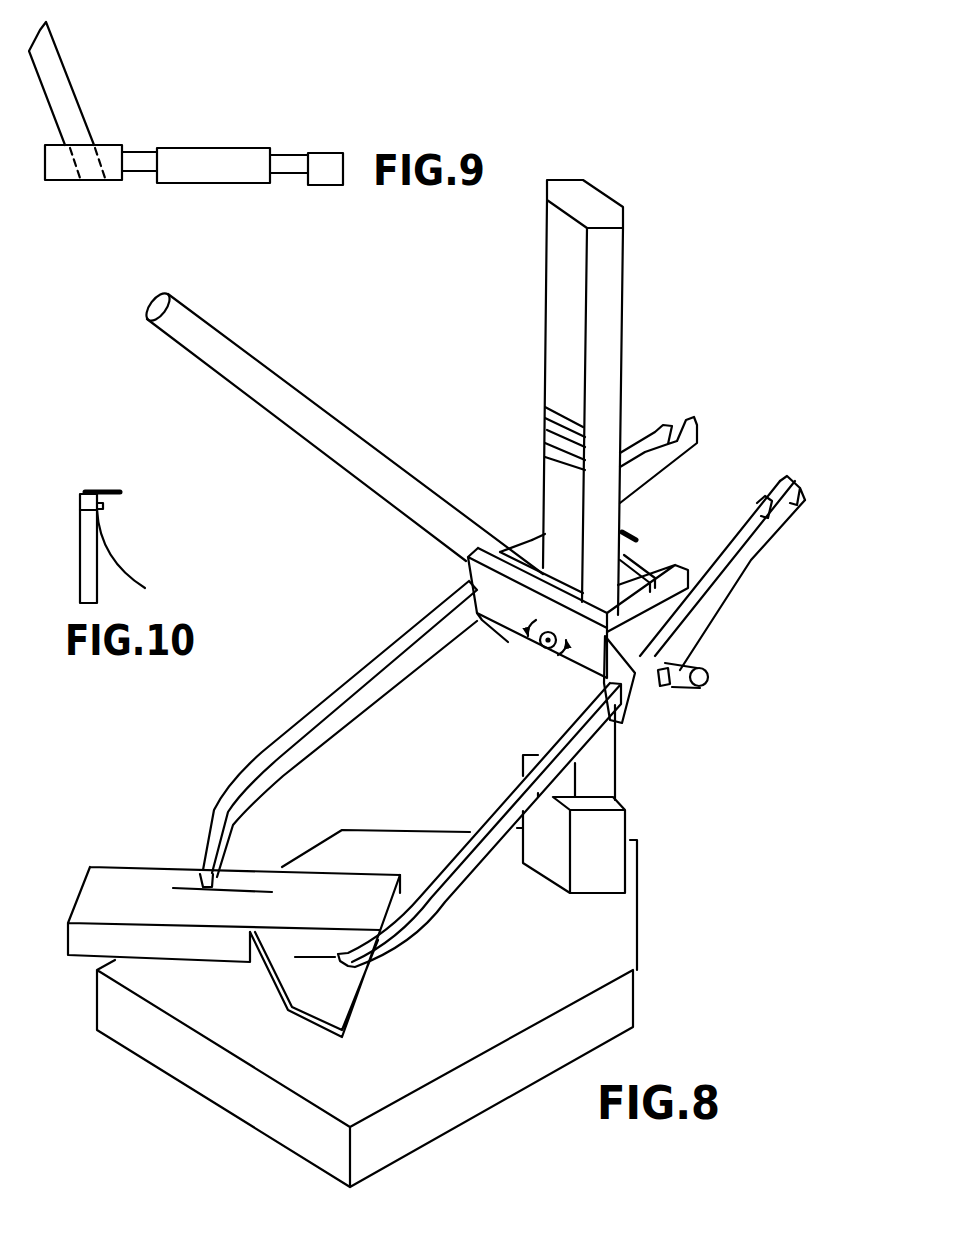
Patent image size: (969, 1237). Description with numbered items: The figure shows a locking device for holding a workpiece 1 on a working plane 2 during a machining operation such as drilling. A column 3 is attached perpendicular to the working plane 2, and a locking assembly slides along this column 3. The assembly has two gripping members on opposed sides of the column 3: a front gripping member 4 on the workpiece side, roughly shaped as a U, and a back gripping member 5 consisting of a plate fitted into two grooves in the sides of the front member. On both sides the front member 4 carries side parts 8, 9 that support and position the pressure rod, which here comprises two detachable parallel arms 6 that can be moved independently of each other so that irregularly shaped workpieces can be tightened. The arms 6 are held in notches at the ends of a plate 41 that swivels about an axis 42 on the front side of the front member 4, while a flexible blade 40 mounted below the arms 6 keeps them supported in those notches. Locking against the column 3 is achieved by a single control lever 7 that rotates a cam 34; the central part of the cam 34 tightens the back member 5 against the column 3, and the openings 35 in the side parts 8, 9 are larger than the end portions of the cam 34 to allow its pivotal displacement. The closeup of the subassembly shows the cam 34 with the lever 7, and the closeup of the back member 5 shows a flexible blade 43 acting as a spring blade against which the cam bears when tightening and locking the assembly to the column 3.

In FIG. 8, the workpiece 1 is at (118, 860).
In FIG. 8, the working plane 2 is at (95, 993).
In FIG. 8, the column 3 is at (625, 305).
In FIG. 8, the front gripping member 4 is at (540, 553).
In FIG. 10, the back gripping member 5 is at (80, 538).
In FIG. 8, the back gripping member 5 is at (630, 557).
In FIG. 8, the pressure rod arms 6 is at (485, 822).
In FIG. 9, the control lever 7 is at (60, 52).
In FIG. 8, the control lever 7 is at (258, 360).
In FIG. 8, the side part 8 is at (518, 537).
In FIG. 8, the side part 9 is at (680, 570).
In FIG. 9, the cam 34 is at (112, 147).
In FIG. 8, the cam 34 is at (698, 690).
In FIG. 8, the opening 35 is at (661, 688).
In FIG. 8, the flexible blade 40 is at (483, 633).
In FIG. 8, the plate 41 is at (465, 556).
In FIG. 8, the axis 42 is at (540, 642).
In FIG. 10, the flexible blade 43 is at (103, 538).